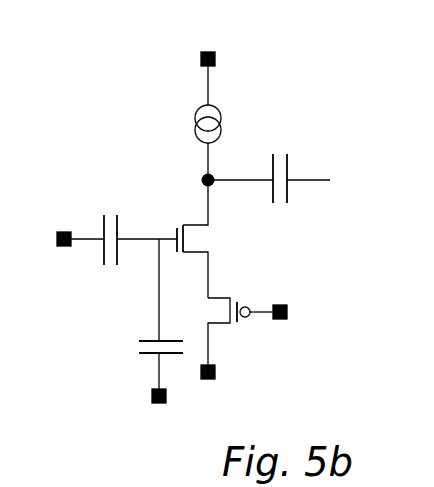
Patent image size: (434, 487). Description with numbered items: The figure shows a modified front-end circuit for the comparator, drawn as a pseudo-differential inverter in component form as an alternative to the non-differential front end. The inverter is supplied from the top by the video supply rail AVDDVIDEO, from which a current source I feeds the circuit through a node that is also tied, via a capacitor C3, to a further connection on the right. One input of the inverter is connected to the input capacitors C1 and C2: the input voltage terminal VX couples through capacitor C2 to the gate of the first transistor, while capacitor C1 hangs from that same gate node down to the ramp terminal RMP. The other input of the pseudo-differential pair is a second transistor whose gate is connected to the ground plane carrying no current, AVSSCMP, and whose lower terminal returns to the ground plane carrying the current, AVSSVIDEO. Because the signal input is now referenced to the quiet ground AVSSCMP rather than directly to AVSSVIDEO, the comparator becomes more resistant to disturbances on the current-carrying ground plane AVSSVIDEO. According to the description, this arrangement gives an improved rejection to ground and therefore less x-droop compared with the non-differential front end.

The video supply voltage AVDDVIDEO is at (237, 66).
The current source I is at (183, 107).
The capacitor C3 is at (269, 168).
The input capacitor C2 is at (137, 230).
The input voltage VX is at (60, 240).
The input capacitor C1 is at (143, 314).
The ramp signal terminal RMP is at (126, 396).
The ground plane carrying the current AVSSVIDEO is at (268, 372).
The ground plane carrying no current AVSSCMP is at (319, 312).